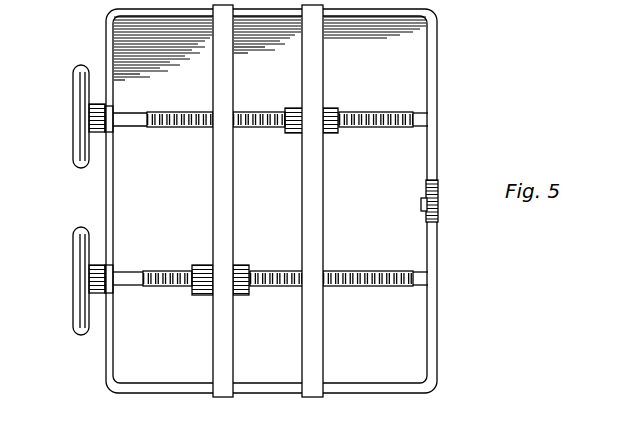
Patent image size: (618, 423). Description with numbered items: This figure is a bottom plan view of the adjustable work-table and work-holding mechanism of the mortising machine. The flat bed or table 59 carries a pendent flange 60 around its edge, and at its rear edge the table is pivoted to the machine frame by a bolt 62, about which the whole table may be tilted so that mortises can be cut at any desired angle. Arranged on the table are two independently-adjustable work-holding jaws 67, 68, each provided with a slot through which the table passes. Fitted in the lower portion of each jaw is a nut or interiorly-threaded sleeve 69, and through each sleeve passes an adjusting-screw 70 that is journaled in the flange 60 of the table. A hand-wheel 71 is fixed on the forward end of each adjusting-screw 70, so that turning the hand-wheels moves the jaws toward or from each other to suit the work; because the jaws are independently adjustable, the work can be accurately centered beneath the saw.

The flat bed or table 59 is at (270, 199).
The pendent flange 60 is at (375, 385).
The bolt 62 is at (447, 197).
The work-holding jaw 67 is at (212, 172).
The work-holding jaw 68 is at (323, 191).
The nut or interiorly-threaded sleeve 69 is at (338, 110).
The adjusting-screw 70 is at (150, 112).
The hand-wheel 71 is at (65, 118).